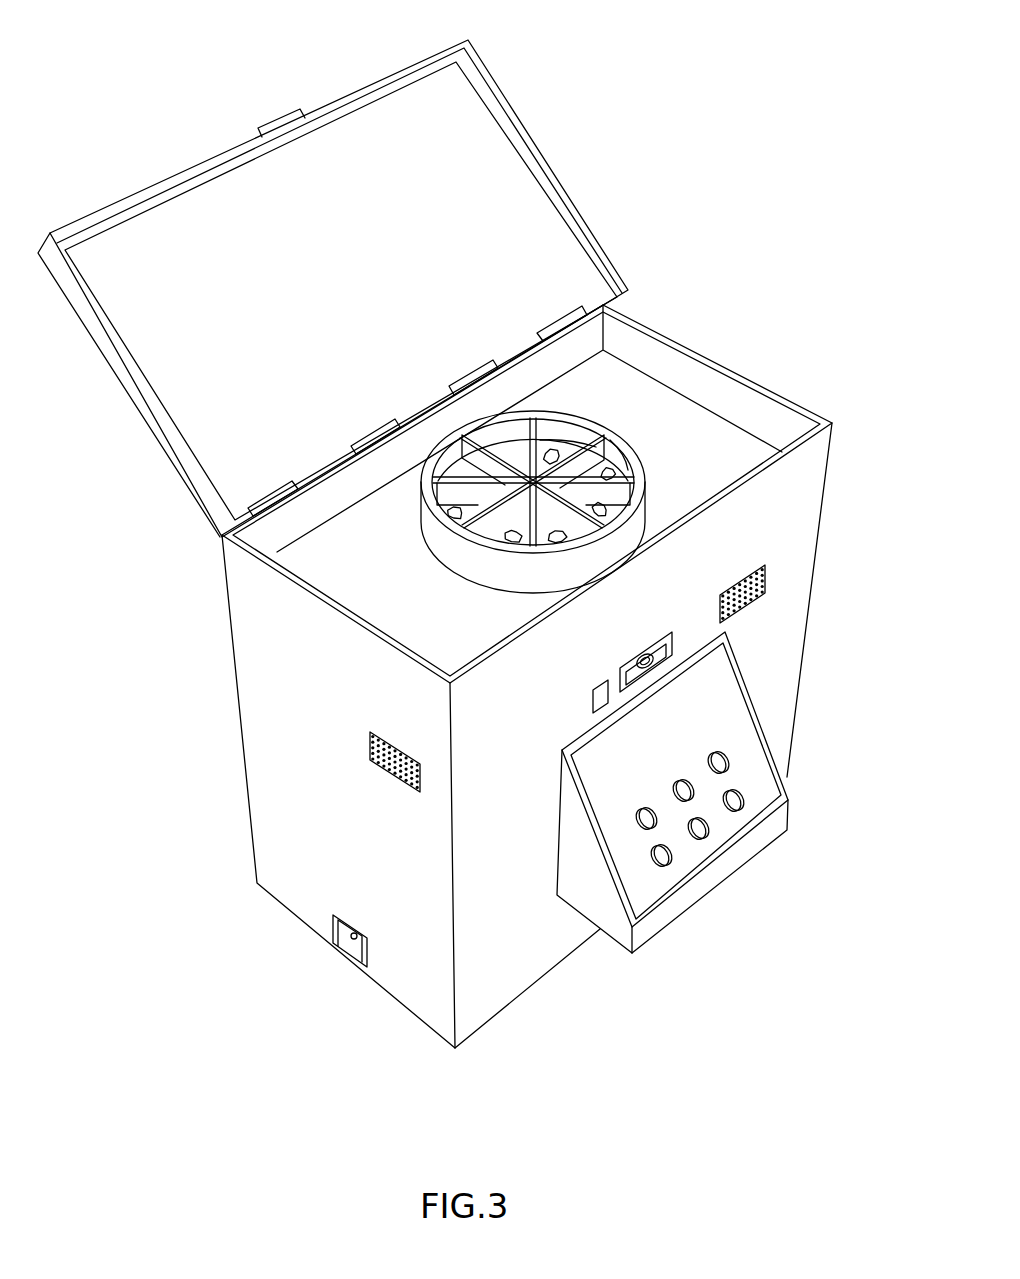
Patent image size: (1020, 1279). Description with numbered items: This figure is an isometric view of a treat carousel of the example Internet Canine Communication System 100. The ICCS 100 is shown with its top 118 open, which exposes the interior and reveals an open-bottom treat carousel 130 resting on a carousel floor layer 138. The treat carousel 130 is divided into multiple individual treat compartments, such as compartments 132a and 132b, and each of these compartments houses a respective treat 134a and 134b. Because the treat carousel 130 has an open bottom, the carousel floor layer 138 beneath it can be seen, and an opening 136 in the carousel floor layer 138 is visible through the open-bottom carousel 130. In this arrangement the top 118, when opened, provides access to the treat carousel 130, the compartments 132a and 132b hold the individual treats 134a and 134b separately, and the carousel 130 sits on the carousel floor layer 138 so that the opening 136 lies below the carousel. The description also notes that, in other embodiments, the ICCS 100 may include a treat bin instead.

The Internet Canine Communication System 100 is at (789, 143).
The top 118 is at (460, 170).
The treat carousel 130 is at (463, 558).
The compartment 132a is at (555, 432).
The compartment 132b is at (580, 453).
The treat 134a is at (615, 457).
The treat 134b is at (640, 465).
The opening 136 is at (487, 470).
The carousel floor layer 138 is at (705, 472).